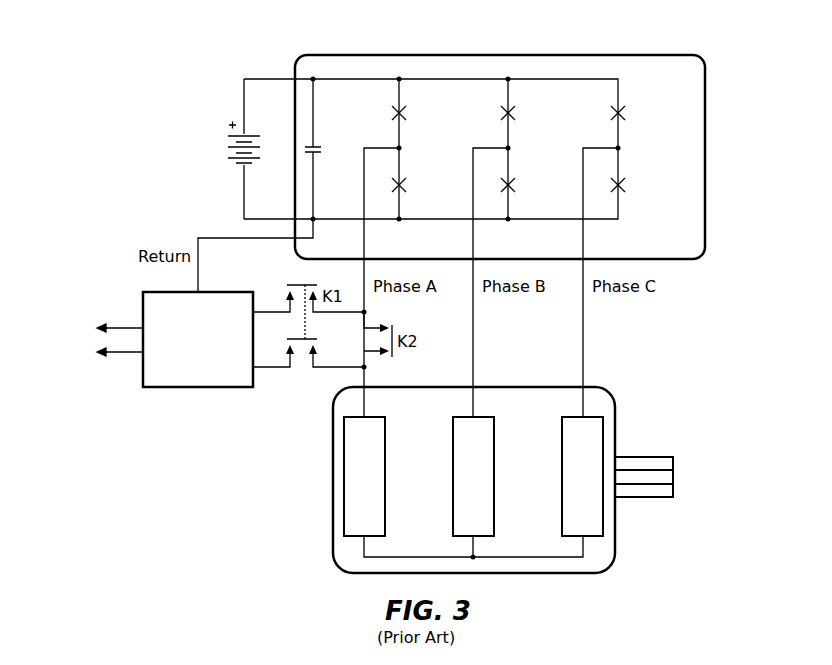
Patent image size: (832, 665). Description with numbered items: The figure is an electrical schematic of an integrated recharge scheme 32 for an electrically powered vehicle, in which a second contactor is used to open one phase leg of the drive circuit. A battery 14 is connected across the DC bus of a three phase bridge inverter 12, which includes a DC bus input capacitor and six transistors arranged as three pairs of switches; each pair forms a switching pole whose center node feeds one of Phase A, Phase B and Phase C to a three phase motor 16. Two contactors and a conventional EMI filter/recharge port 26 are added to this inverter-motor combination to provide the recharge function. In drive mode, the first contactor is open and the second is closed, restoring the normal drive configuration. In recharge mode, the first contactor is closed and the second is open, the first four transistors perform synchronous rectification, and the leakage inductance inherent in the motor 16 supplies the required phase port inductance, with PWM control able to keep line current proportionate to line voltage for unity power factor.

The three phase bridge inverter 12 is at (618, 56).
The battery 14 is at (222, 111).
The three phase motor 16 is at (617, 433).
The EMI filter/recharge port 26 is at (143, 305).
The integrated recharge scheme 32 is at (750, 71).